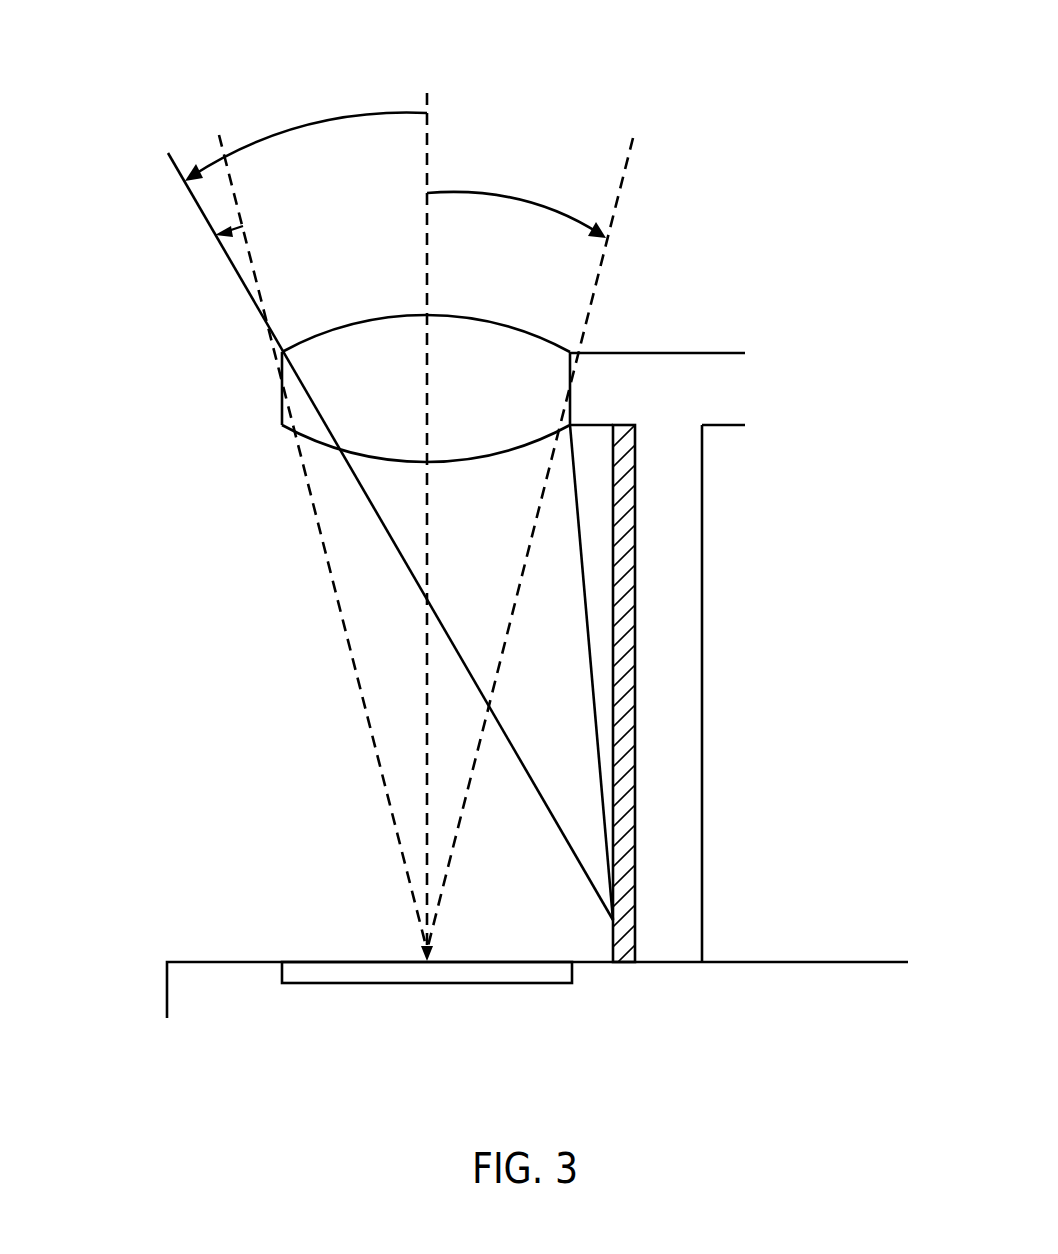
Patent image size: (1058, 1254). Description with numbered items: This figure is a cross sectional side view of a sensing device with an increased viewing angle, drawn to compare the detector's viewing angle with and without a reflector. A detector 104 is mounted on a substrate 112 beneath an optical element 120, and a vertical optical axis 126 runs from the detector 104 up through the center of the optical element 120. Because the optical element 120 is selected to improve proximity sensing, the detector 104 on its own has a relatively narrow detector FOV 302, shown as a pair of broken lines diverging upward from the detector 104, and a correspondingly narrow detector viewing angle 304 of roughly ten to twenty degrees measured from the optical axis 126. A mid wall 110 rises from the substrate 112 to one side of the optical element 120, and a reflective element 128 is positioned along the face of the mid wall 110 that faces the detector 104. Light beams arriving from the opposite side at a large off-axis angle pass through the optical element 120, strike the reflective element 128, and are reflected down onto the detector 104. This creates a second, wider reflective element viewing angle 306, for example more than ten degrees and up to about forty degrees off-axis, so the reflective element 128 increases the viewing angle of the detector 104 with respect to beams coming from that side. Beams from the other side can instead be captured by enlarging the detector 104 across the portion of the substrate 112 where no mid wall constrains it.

The detector 104 is at (388, 973).
The mid wall 110 is at (675, 513).
The substrate 112 is at (202, 962).
The optical element 120 is at (282, 390).
The optical axis 126 is at (428, 133).
The reflective element 128 is at (635, 622).
The detector field of view 302 is at (622, 175).
The detector viewing angle 304 is at (520, 200).
The reflective element viewing angle 306 is at (302, 127).